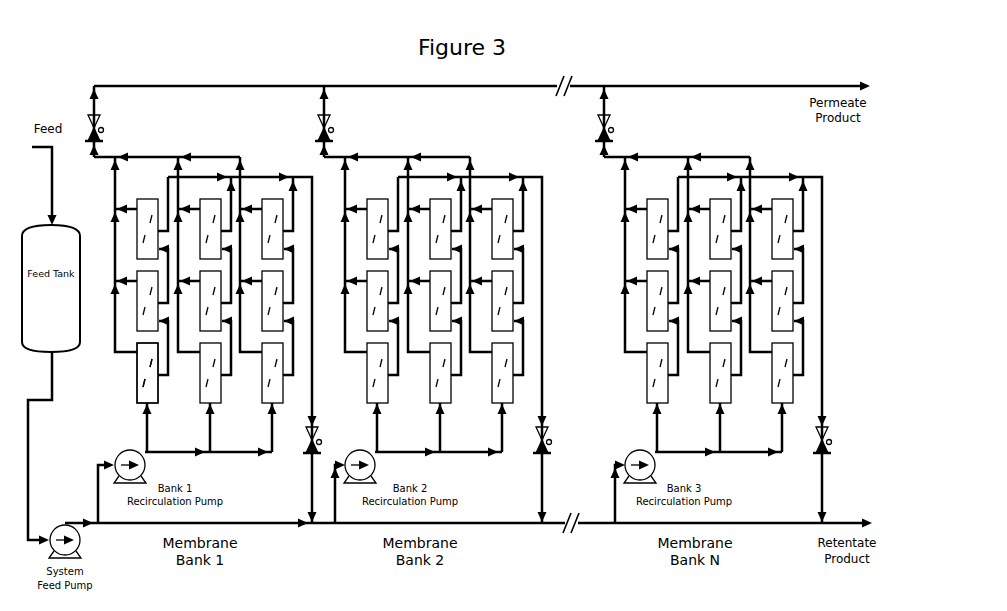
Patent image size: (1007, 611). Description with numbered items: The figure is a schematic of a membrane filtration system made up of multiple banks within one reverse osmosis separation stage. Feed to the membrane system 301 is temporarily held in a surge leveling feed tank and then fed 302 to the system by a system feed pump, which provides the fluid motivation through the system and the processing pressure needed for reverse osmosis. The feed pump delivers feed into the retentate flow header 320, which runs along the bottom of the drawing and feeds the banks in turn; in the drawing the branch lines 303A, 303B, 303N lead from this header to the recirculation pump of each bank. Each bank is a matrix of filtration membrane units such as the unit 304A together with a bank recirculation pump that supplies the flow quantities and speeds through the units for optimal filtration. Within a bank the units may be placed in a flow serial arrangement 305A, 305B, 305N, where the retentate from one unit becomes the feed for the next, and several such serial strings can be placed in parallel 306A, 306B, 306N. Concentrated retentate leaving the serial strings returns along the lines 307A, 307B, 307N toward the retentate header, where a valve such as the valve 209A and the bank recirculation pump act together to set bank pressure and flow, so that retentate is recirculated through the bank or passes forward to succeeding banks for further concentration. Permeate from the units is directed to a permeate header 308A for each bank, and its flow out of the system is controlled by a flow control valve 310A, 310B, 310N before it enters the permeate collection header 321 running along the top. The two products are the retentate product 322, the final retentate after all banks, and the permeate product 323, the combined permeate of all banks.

The feed to the membrane system 301 is at (42, 188).
The feed tank outlet to the membrane filtration system 302 is at (30, 442).
The bank 1 recirculation pump feed line 303A is at (97, 492).
The bank 2 recirculation pump feed line 303B is at (341, 505).
The bank N recirculation pump feed line 303N is at (613, 492).
The filtration membrane unit 304A is at (128, 392).
The flow serial arrangement of membrane units 305A is at (228, 454).
The flow serial arrangement of membrane units 305B is at (470, 454).
The flow serial arrangement of membrane units 305N is at (735, 454).
The parallel serial flow arrangement / permeate flow from the units 306A is at (114, 198).
The parallel serial flow arrangement / permeate flow from the units 306B is at (344, 187).
The parallel serial flow arrangement / permeate flow from the units 306N is at (624, 189).
The bank 1 concentrate header 307A is at (278, 176).
The bank 2 concentrate header 307B is at (500, 176).
The bank N concentrate header 307N is at (777, 176).
The permeate header 308A is at (150, 157).
The flow control valve 310A is at (103, 131).
The flow control valve 310B is at (333, 131).
The flow control valve 310N is at (613, 131).
The bank 1 concentrate valve 209A is at (319, 436).
The retentate flow header 320 is at (250, 524).
The permeate collection header 321 is at (152, 86).
The retentate product 322 is at (852, 518).
The permeate product 323 is at (795, 88).